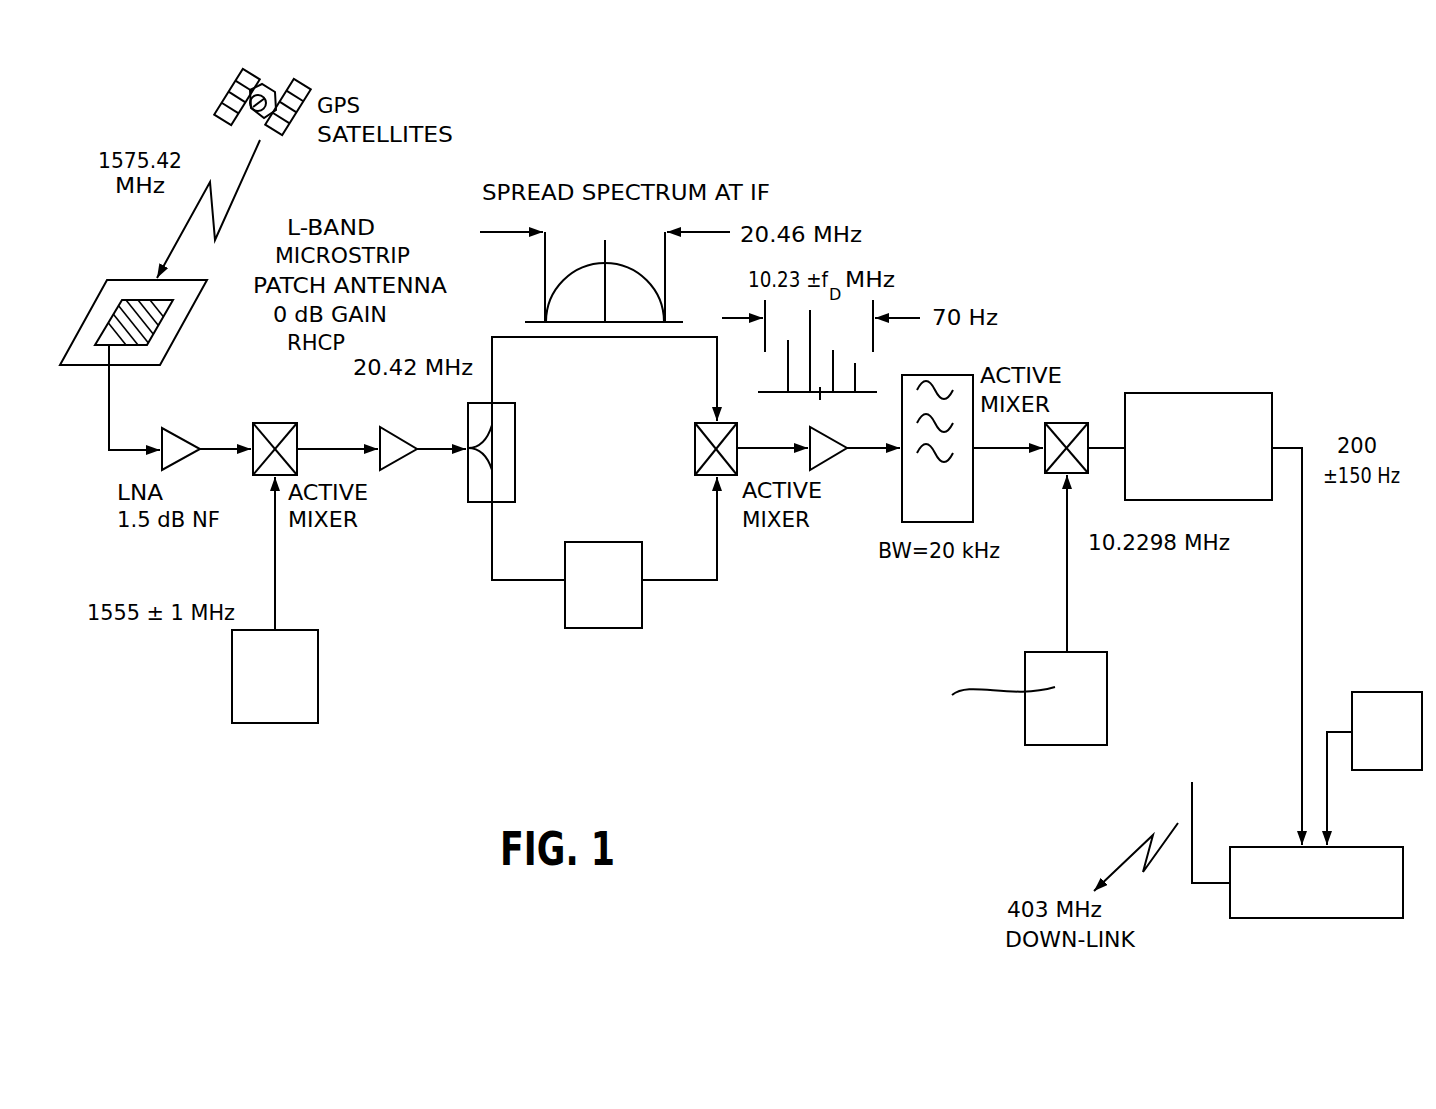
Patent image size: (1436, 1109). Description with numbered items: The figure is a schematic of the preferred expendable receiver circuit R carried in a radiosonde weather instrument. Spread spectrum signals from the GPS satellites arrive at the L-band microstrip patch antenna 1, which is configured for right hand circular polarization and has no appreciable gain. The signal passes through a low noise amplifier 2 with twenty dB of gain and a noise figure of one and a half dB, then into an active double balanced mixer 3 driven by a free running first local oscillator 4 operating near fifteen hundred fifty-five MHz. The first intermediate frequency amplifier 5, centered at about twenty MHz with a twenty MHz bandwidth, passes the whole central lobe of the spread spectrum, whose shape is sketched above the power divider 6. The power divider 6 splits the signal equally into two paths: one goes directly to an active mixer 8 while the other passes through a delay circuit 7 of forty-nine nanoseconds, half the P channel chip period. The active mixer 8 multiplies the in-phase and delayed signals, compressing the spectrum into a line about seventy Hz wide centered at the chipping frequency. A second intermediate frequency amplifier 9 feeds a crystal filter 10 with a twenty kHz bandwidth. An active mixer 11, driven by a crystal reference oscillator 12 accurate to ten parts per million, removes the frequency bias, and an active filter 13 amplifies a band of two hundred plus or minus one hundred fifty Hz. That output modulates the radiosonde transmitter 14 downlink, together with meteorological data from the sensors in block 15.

The L-band microstrip patch antenna 1 is at (70, 347).
The low noise amplifier 2 is at (168, 428).
The active double balanced mixer 3 is at (277, 423).
The first local oscillator 4 is at (293, 630).
The first intermediate frequency amplifier 5 is at (407, 457).
The power divider 6 is at (517, 435).
The delay circuit 7 is at (642, 593).
The active mixer 8 is at (693, 445).
The second intermediate frequency amplifier 9 is at (822, 428).
The crystal filter 10 is at (927, 380).
The active mixer 11 is at (1067, 420).
The crystal reference oscillator 12 is at (1088, 650).
The active filter 13 is at (1233, 395).
The radiosonde transmitter 14 is at (1253, 918).
The meteorological data block 15 is at (1365, 692).
The receiver circuit R is at (982, 270).